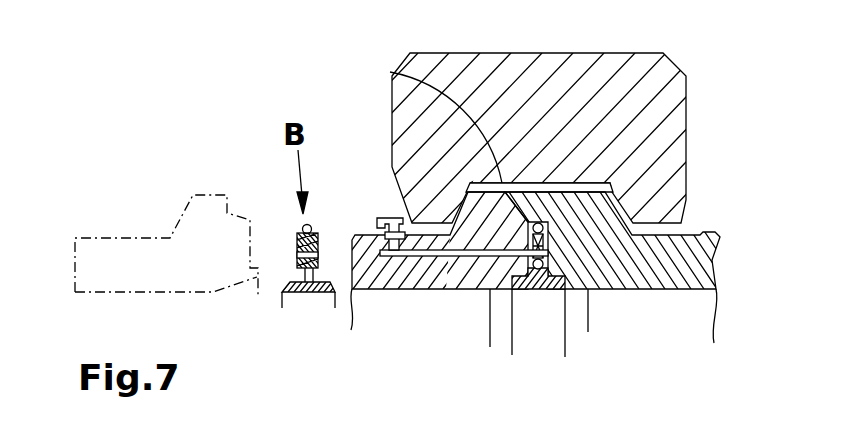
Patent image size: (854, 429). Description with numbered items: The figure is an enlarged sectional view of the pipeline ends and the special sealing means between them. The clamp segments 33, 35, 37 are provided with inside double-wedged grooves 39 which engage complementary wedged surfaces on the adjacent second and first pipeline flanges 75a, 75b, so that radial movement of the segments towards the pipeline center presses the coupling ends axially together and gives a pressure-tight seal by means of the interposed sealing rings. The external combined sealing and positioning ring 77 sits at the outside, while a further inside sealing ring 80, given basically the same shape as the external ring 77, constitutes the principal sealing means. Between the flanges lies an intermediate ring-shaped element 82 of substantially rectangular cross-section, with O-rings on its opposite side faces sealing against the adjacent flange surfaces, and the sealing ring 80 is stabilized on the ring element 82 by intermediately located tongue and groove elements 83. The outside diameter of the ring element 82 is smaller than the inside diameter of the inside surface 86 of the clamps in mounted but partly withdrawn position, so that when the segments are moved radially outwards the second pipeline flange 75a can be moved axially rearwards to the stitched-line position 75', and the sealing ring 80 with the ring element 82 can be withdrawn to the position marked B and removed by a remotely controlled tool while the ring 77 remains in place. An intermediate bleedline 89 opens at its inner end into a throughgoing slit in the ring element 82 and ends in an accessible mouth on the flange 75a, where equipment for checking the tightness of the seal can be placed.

The clamp segment 33 is at (537, 116).
The clamp segment 35 is at (537, 139).
The clamp segment 37 is at (517, 80).
The double-wedged groove 39 is at (390, 73).
The external sealing and positioning ring 77 is at (555, 185).
The second pipeline flange 75a is at (455, 242).
The first pipeline flange 75b is at (632, 262).
The axially withdrawn position of second pipeline flange 75' is at (166, 218).
The inside surface of the clamps 86 is at (393, 176).
The intermediate bleedline 89 is at (401, 256).
The tongue and groove elements 83 is at (528, 290).
The intermediate ring-shaped element 82 is at (300, 235).
The inside sealing ring 80 is at (305, 292).